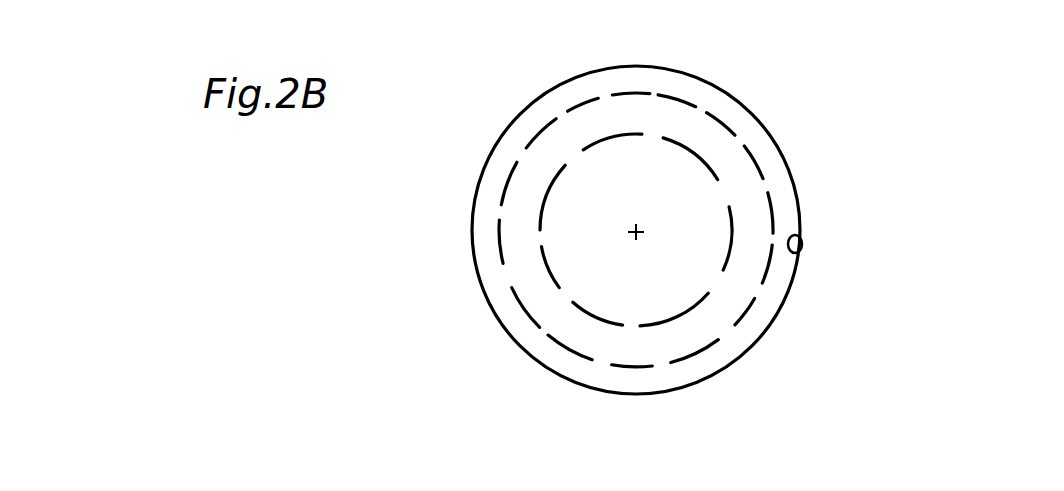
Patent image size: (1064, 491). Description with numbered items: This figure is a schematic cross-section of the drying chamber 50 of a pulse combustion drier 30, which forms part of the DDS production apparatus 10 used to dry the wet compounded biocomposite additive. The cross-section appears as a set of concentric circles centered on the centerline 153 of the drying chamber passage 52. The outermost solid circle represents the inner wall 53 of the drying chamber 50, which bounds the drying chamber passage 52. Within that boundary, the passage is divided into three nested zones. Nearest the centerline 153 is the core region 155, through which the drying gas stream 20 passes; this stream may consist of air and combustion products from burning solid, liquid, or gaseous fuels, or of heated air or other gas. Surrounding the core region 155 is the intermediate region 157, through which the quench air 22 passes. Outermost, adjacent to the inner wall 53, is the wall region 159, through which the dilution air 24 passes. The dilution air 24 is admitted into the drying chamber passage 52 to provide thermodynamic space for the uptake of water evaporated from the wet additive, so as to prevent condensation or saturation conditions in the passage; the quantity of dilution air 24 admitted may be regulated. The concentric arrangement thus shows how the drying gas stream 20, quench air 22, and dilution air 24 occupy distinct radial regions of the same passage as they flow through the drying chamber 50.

The DDS production apparatus 10 is at (955, 165).
The drying gas stream 20 is at (590, 263).
The quench air 22 is at (590, 337).
The dilution air 24 is at (635, 380).
The pulse combustion drier 30 is at (452, 236).
The drying chamber 50 is at (795, 182).
The drying chamber passage 52 is at (707, 100).
The inner wall 53 is at (800, 238).
The centerline 153 is at (642, 230).
The core region 155 is at (598, 158).
The intermediate region 157 is at (549, 157).
The wall region 159 is at (500, 167).